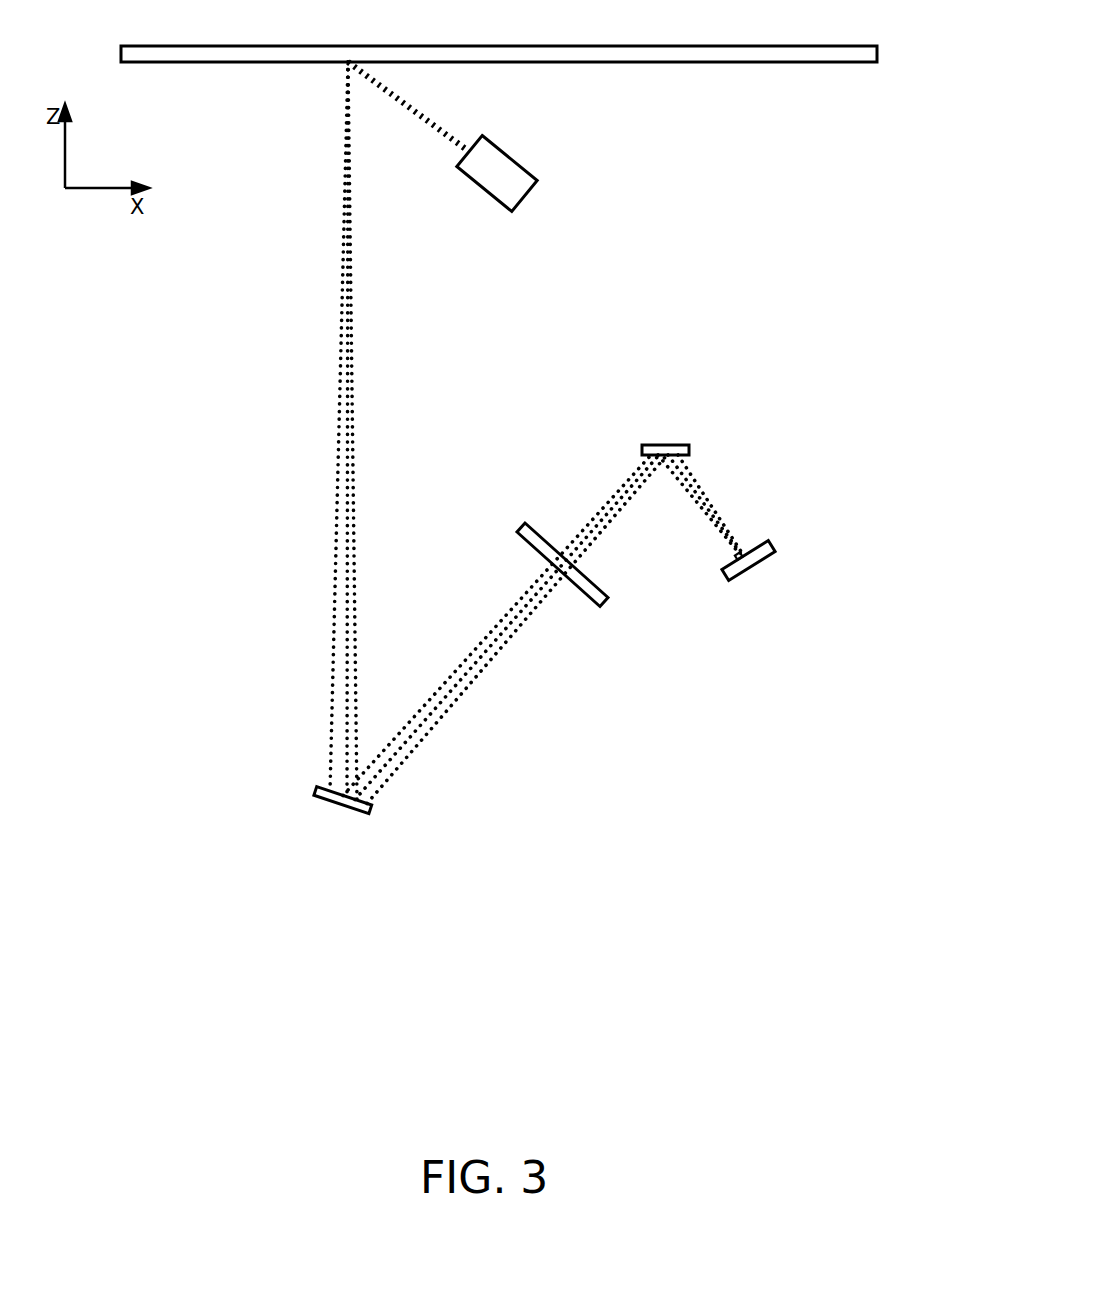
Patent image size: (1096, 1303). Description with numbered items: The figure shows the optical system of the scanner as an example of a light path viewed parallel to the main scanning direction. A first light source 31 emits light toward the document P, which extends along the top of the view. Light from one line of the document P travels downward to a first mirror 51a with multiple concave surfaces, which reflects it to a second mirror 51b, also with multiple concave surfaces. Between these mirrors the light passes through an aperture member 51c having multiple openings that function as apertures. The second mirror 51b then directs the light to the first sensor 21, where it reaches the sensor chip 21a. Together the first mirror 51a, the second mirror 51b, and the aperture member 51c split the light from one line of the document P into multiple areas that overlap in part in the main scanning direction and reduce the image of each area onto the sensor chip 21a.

The document P is at (523, 35).
The first light source 31 is at (531, 174).
The first mirror 51a is at (296, 815).
The second mirror 51b is at (701, 428).
The aperture member 51c is at (603, 597).
The first sensor 21 is at (787, 569).
The sensor chip 21a is at (793, 527).